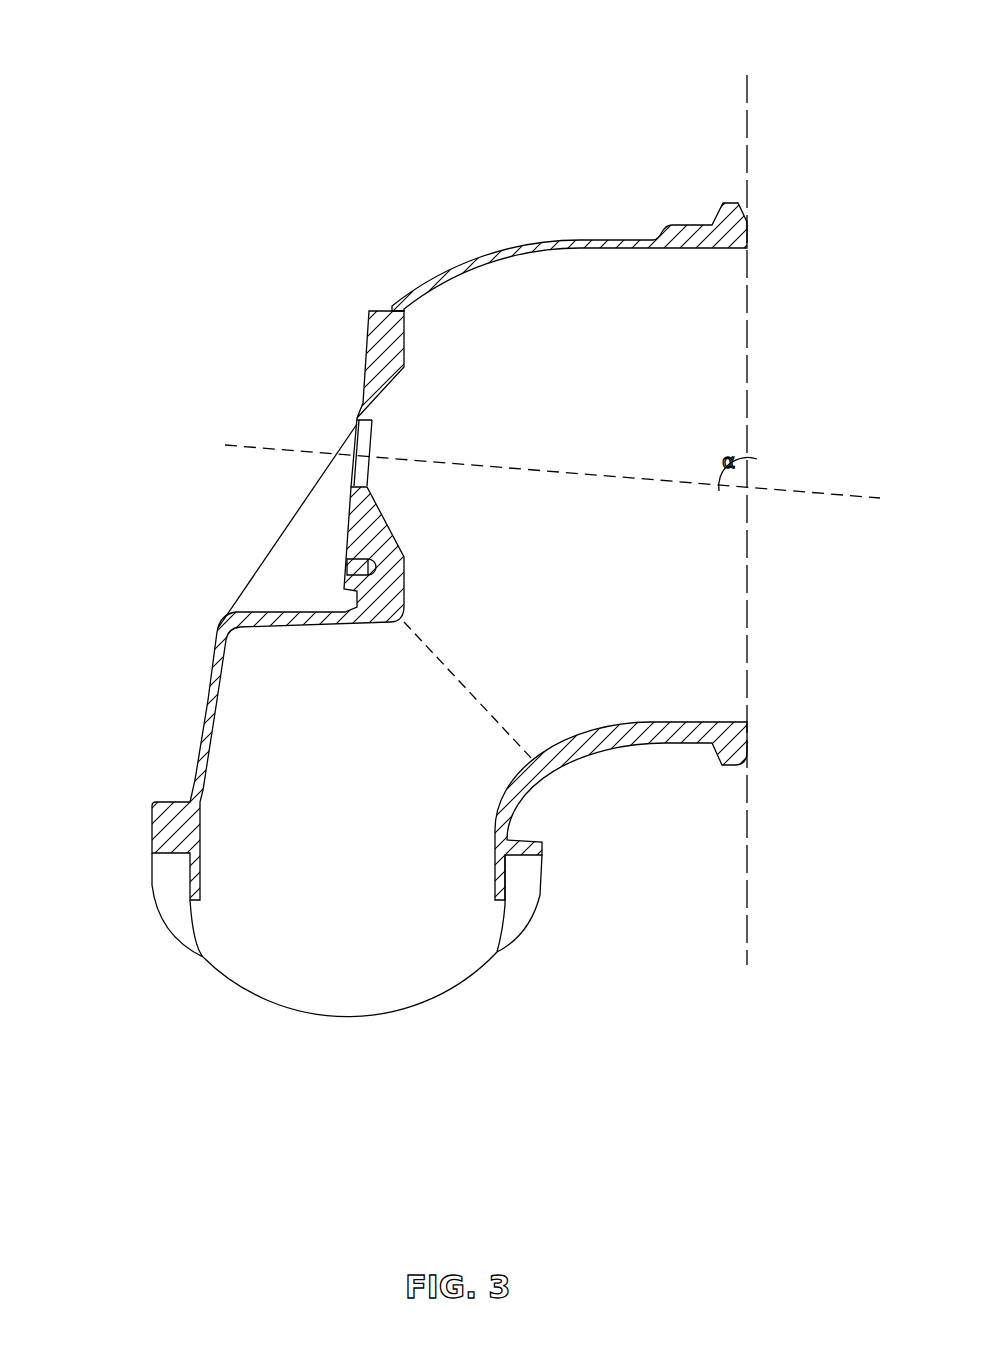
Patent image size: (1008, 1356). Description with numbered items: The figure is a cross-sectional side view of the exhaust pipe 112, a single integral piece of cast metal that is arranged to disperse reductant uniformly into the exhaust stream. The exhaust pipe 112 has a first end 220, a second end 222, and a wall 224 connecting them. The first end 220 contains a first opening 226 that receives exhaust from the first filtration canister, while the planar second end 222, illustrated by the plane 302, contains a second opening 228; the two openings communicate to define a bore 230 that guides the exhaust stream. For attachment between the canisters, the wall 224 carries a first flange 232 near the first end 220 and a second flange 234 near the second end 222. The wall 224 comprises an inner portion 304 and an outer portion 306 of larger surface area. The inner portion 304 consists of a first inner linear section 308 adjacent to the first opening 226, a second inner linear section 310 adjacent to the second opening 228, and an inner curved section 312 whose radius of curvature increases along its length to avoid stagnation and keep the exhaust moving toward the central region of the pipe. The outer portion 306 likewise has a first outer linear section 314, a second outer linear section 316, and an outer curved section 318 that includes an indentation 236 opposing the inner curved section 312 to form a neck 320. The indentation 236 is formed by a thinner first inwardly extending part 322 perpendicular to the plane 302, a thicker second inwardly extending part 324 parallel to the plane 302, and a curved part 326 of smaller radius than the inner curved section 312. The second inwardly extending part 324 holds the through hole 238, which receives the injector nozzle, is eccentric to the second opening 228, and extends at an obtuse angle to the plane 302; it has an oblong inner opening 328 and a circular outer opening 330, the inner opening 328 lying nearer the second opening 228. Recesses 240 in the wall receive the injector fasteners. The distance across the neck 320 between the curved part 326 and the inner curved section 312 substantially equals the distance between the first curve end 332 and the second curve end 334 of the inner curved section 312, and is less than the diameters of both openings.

The exhaust pipe 112 is at (140, 25).
The first end 220 is at (460, 985).
The second end 222 is at (752, 240).
The wall 224 is at (566, 246).
The first opening 226 is at (340, 1018).
The second opening 228 is at (748, 535).
The bore 230 is at (622, 572).
The first flange 232 is at (543, 848).
The second flange 234 is at (727, 766).
The indentation 236 is at (255, 597).
The through hole 238 is at (400, 415).
The recesses 240 is at (347, 567).
The plane 302 is at (748, 855).
The inner portion 304 is at (578, 745).
The outer portion 306 is at (425, 278).
The first inner linear section 308 is at (493, 880).
The second inner linear section 310 is at (708, 720).
The inner curved section 312 is at (536, 758).
The first outer linear section 314 is at (200, 855).
The second outer linear section 316 is at (672, 250).
The outer curved section 318 is at (488, 262).
The neck 320 is at (455, 694).
The first inwardly extending part 322 is at (277, 629).
The second inwardly extending part 324 is at (405, 345).
The curved part 326 is at (397, 620).
The inner opening 328 is at (405, 494).
The outer opening 330 is at (358, 452).
The first curve end 332 is at (493, 828).
The second curve end 334 is at (653, 720).